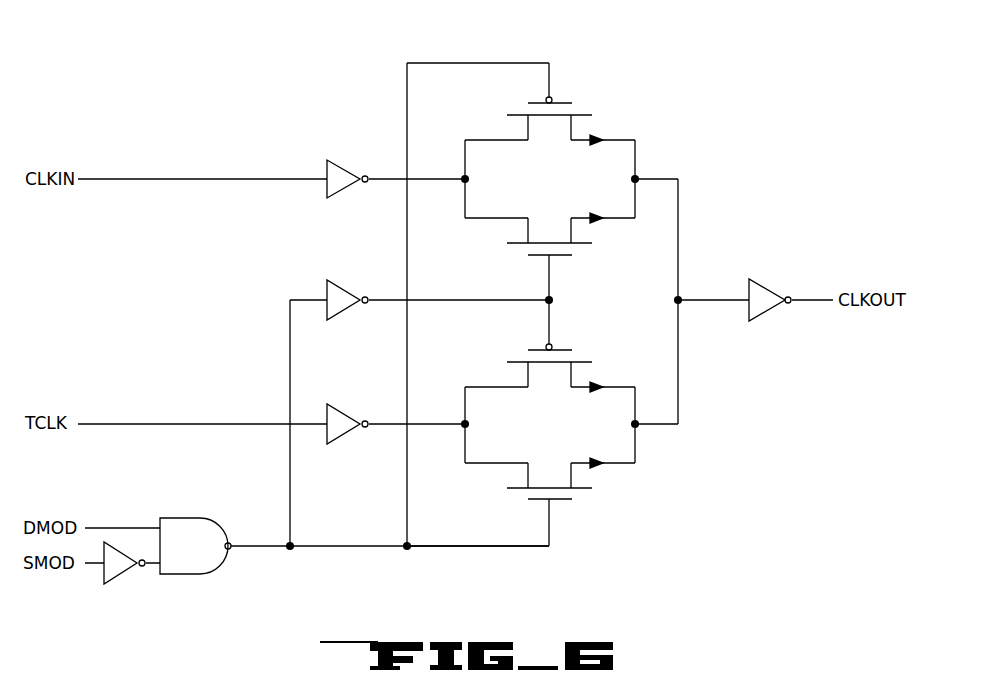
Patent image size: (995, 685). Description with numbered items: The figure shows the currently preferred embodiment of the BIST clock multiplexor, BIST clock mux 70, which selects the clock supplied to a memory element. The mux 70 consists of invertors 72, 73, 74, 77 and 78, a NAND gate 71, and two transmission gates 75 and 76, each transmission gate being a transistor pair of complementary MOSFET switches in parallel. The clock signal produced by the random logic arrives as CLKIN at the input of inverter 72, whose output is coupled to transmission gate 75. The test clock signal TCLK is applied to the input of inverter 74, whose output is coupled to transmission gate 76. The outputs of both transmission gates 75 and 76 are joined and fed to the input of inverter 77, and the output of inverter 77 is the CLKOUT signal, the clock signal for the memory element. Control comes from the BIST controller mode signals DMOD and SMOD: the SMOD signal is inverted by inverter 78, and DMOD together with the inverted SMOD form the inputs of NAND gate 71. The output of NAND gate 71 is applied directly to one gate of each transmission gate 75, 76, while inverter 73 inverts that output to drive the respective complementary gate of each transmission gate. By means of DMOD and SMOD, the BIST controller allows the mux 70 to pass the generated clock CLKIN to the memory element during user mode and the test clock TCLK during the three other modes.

The BIST clock mux 70 is at (713, 52).
The NAND gate 71 is at (199, 555).
The inverter 72 is at (349, 166).
The inverter 73 is at (343, 288).
The inverter 74 is at (344, 412).
The transmission gate 75 is at (561, 189).
The transmission gate 76 is at (561, 434).
The inverter 77 is at (765, 287).
The inverter 78 is at (122, 578).